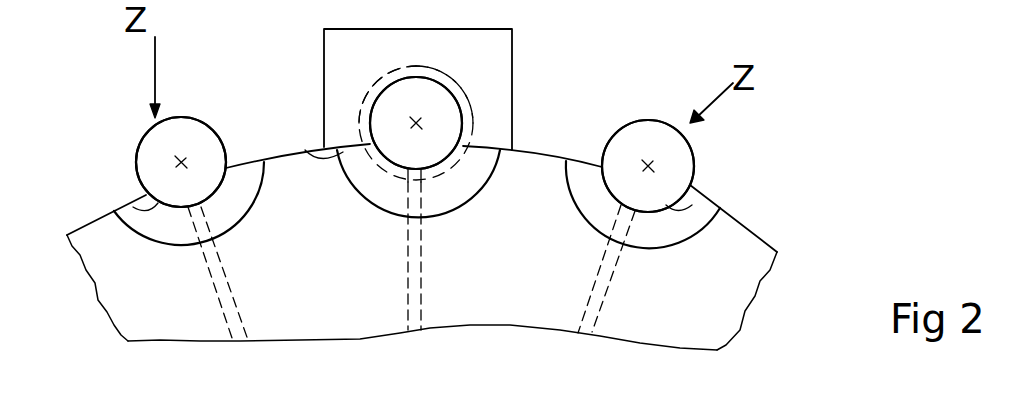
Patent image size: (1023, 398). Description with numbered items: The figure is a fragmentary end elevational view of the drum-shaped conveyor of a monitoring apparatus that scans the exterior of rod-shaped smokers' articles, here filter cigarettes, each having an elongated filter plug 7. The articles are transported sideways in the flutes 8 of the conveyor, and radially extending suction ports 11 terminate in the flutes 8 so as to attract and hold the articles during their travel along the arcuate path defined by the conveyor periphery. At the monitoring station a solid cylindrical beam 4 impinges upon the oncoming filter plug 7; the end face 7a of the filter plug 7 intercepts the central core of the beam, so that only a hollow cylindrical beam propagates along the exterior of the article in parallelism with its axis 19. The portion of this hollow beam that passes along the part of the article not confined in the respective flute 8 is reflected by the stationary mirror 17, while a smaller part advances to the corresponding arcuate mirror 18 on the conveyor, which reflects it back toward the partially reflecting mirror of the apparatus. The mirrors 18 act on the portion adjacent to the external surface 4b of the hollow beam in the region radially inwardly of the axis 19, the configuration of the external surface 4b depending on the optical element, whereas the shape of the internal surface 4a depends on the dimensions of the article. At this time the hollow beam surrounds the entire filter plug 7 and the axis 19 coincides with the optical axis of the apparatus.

The filter plug 7 is at (150, 141).
The end face of the filter plug 7a is at (415, 144).
The flute 8 is at (135, 205).
The suction port 11 is at (242, 336).
The stationary mirror 17 is at (502, 75).
The arcuate mirror 18 is at (227, 213).
The axis of the article 19 is at (187, 158).
The solid cylindrical beam 4 is at (372, 97).
The internal surface of the hollow cylindrical beam 4a is at (433, 75).
The external surface of the hollow cylindrical beam 4b is at (397, 70).